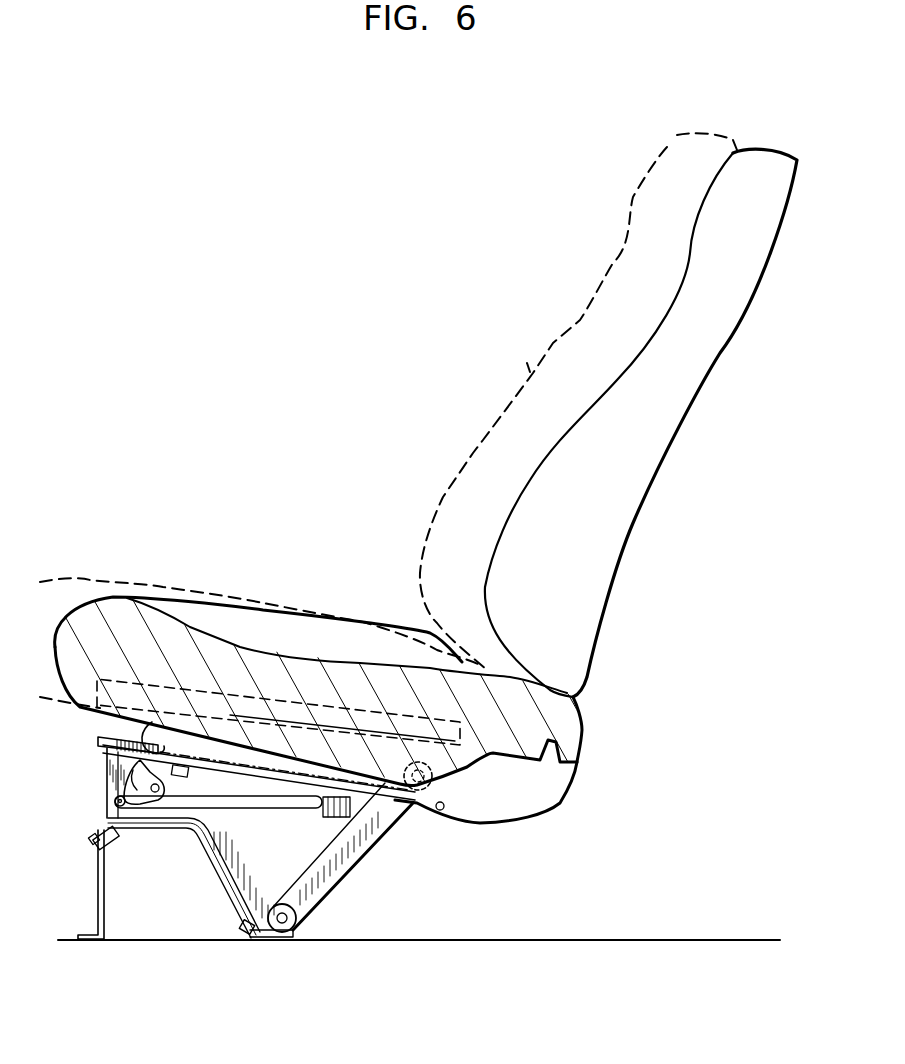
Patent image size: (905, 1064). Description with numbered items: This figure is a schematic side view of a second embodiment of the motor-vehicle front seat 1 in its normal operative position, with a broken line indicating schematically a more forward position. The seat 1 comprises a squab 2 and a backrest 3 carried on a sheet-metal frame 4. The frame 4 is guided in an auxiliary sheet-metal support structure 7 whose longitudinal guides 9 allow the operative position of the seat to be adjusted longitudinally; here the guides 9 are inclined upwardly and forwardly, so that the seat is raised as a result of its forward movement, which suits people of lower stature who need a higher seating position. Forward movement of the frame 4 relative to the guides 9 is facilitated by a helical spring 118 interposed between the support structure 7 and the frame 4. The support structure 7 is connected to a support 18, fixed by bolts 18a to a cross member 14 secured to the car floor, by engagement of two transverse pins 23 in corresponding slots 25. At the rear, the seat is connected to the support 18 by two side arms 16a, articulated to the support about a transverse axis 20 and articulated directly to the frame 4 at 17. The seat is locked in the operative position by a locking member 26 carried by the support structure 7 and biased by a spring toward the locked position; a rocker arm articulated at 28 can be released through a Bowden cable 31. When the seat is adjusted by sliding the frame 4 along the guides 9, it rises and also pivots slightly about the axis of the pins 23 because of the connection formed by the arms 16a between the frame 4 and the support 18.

The seat 1 is at (370, 422).
The squab 2 is at (223, 657).
The backrest 3 is at (602, 510).
The sheet-metal frame 4 is at (142, 729).
The auxiliary sheet-metal support structure 7 is at (110, 768).
The longitudinal guides 9 is at (360, 852).
The cross member 14 is at (98, 918).
The side arms 16a is at (323, 877).
The transverse axis 17 is at (418, 790).
The support 18 is at (227, 860).
The bolts 18a is at (97, 853).
The transverse axis 20 is at (293, 934).
The transverse pins 23 is at (116, 802).
The longitudinal slot 25 is at (280, 803).
The locking member 26 is at (137, 790).
The articulation point 28 is at (157, 794).
The Bowden cable 31 is at (223, 780).
The helical spring 118 is at (163, 752).